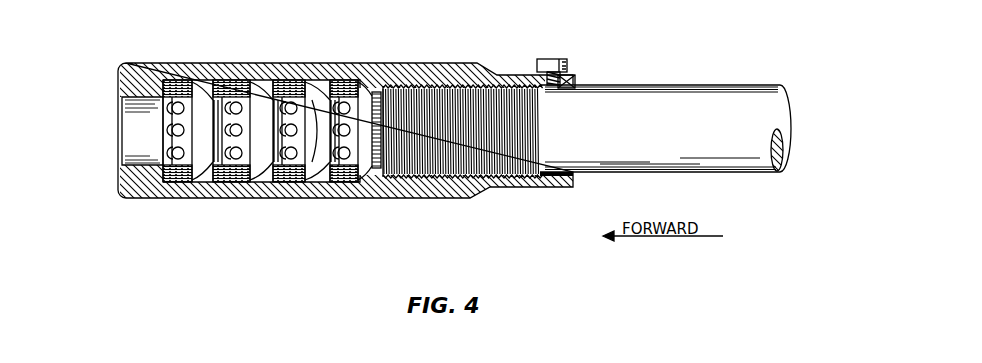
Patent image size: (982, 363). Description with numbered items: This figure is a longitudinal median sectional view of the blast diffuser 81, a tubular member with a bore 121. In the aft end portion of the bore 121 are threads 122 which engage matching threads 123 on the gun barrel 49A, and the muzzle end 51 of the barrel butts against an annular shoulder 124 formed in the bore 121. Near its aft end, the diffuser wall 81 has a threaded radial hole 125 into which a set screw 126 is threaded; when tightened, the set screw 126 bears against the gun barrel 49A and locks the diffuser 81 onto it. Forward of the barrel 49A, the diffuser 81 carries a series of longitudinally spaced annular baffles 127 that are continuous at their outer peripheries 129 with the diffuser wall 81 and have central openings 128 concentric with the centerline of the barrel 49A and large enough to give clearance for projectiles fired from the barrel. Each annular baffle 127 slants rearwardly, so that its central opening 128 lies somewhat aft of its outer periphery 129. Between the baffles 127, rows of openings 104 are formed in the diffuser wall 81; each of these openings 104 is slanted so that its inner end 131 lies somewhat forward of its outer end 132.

The gun barrel 49A is at (735, 69).
The muzzle end 51 is at (373, 165).
The blast diffuser 81 is at (427, 201).
The openings 104 is at (233, 199).
The bore 121 is at (140, 158).
The threads 122 is at (436, 86).
The matching threads 123 is at (495, 85).
The annular shoulder 124 is at (385, 85).
The threaded radial hole 125 is at (578, 76).
The set screw 126 is at (563, 60).
The annular baffles 127 is at (310, 65).
The central openings 128 is at (343, 165).
The outer peripheries 129 is at (300, 168).
The inner end 131 is at (250, 65).
The outer end 132 is at (226, 65).